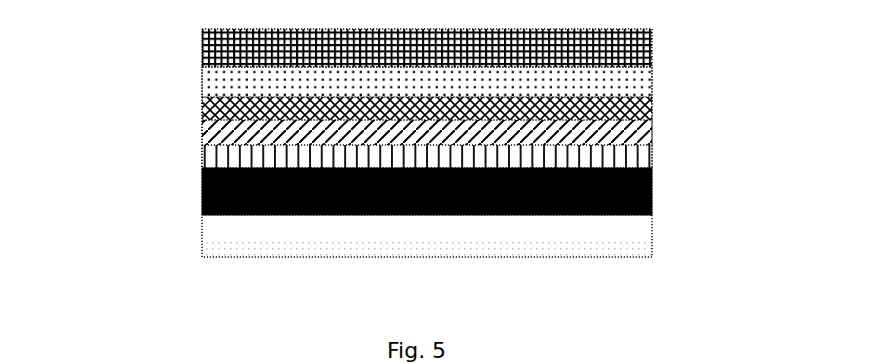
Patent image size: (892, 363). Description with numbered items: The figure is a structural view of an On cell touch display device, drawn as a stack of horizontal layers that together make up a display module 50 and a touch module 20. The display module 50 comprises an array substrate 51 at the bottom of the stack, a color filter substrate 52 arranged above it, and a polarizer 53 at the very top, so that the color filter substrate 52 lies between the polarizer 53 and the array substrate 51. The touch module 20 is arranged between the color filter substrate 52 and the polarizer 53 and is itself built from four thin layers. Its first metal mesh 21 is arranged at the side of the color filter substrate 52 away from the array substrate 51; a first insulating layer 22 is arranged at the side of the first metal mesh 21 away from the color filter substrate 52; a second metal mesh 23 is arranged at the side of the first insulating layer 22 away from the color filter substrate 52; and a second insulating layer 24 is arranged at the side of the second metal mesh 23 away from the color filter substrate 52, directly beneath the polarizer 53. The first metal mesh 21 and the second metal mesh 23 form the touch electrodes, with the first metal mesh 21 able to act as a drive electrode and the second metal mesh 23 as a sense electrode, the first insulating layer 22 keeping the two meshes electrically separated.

The display module 50 is at (105, 216).
The array substrate 51 is at (201, 229).
The color filter substrate 52 is at (201, 190).
The polarizer 53 is at (201, 46).
The touch module 20 is at (751, 68).
The first metal mesh 21 is at (653, 151).
The first insulating layer 22 is at (653, 128).
The second metal mesh 23 is at (653, 104).
The second insulating layer 24 is at (653, 84).